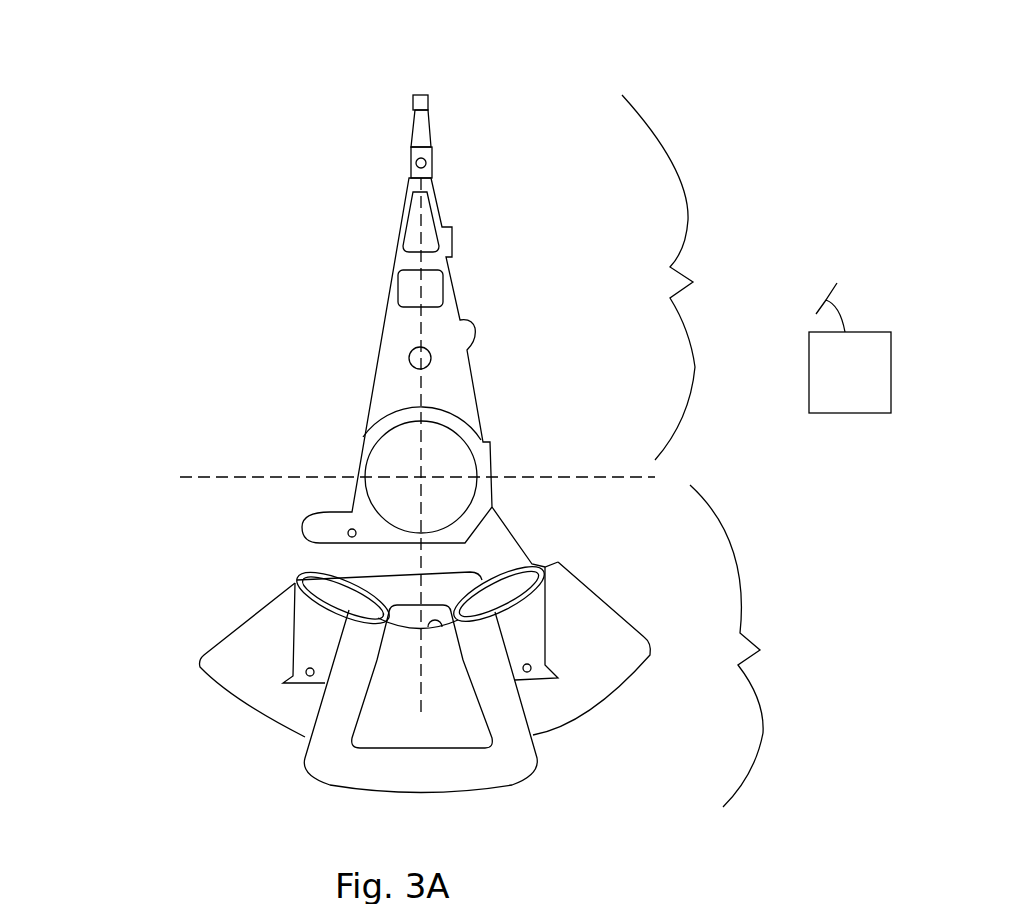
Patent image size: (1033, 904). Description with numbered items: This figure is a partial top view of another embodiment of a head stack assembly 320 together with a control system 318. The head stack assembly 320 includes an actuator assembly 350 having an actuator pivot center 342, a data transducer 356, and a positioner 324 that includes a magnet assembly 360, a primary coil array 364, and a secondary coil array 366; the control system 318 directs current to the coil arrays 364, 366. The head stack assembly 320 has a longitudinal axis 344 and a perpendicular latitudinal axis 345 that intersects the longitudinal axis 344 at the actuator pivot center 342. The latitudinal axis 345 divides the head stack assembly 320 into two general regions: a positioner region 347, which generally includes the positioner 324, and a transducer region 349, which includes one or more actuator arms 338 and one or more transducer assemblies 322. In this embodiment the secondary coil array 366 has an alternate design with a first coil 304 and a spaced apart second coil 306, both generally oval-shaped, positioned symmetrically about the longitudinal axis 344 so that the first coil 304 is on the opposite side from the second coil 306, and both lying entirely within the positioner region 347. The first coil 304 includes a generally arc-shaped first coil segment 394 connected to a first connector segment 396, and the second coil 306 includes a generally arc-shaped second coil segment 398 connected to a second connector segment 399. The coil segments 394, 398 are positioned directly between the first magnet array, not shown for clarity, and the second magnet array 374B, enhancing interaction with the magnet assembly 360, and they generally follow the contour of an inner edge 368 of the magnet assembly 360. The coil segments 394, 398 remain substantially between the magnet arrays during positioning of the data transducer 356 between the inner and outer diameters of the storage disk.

The first coil 304 is at (337, 603).
The second coil 306 is at (470, 585).
The control system 318 is at (850, 348).
The head stack assembly 320 is at (245, 198).
The transducer assembly 322 is at (438, 128).
The positioner 324 is at (553, 506).
The actuator arm 338 is at (447, 297).
The actuator pivot center 342 is at (421, 477).
The longitudinal axis 344 is at (422, 390).
The latitudinal axis 345 is at (518, 477).
The positioner region 347 is at (765, 646).
The transducer region 349 is at (695, 277).
The actuator assembly 350 is at (495, 329).
The data transducer 356 is at (422, 93).
The magnet assembly 360 is at (647, 650).
The primary coil array 364 is at (518, 747).
The secondary coil array 366 is at (172, 485).
The inner edge 368 is at (428, 628).
The second magnet array 374B is at (272, 705).
The first coil segment 394 is at (317, 607).
The first connector segment 396 is at (297, 580).
The second coil segment 398 is at (527, 597).
The second connector segment 399 is at (520, 557).